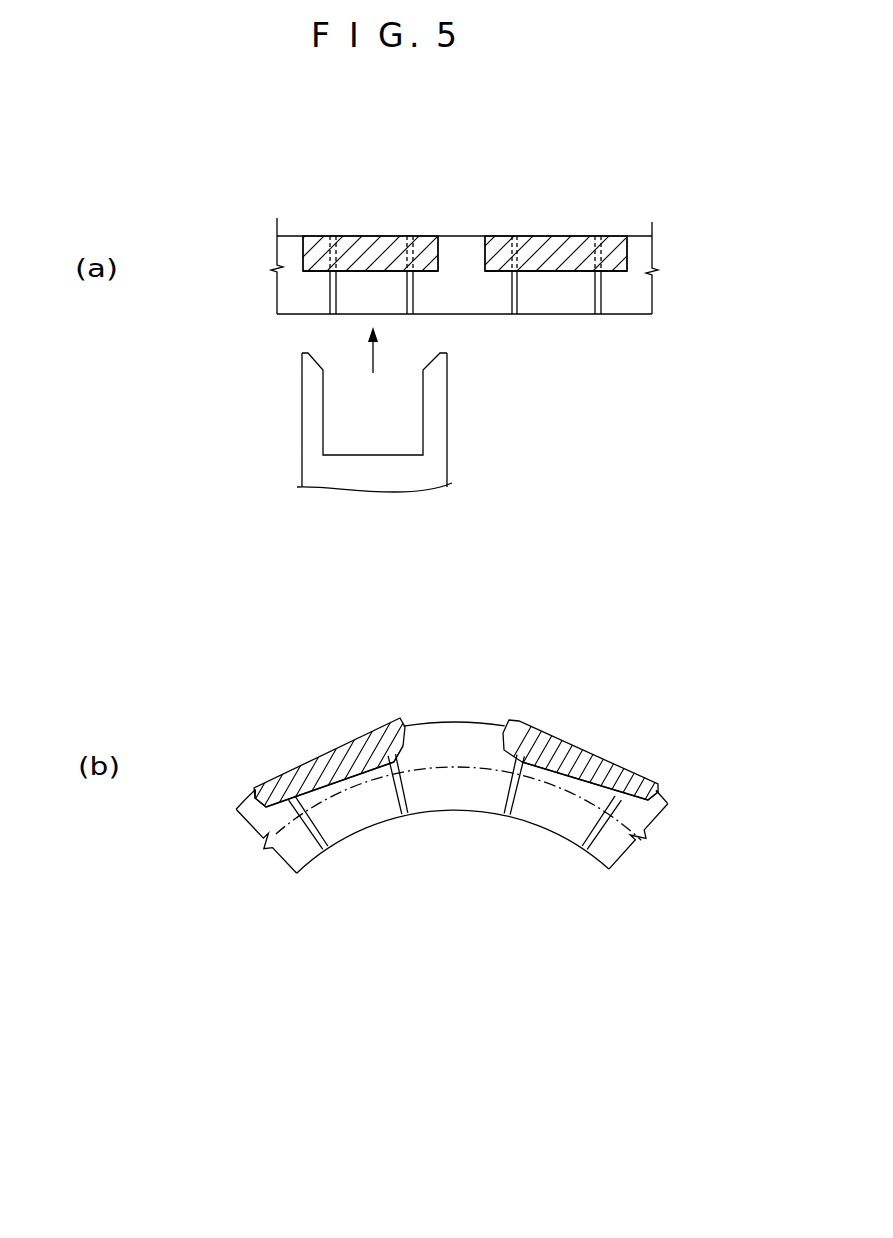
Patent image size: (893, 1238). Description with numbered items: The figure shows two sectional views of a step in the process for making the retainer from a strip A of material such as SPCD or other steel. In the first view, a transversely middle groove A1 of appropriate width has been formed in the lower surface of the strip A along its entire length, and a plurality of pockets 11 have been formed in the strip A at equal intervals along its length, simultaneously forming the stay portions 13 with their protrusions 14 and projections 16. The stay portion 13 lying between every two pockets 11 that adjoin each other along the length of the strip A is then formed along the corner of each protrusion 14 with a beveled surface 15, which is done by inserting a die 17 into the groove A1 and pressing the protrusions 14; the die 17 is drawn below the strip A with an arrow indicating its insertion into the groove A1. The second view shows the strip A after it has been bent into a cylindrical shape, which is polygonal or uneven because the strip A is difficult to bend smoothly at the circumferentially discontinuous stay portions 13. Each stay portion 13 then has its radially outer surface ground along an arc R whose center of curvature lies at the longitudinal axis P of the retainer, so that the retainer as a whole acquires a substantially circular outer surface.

In FIG. 5A, the pocket 11 is at (462, 248).
In FIG. 5B, the pocket 11 is at (425, 790).
In FIG. 5A, the stay portion 13 is at (367, 235).
In FIG. 5B, the stay portion 13 is at (318, 765).
In FIG. 5A, the protrusion 14 is at (318, 236).
In FIG. 5B, the protrusion 14 is at (518, 722).
In FIG. 5A, the beveled surface 15 is at (307, 258).
In FIG. 5B, the beveled surface 15 is at (498, 743).
In FIG. 5A, the projection 16 is at (413, 300).
In FIG. 5B, the projection 16 is at (506, 808).
In FIG. 5A, the die 17 is at (448, 448).
In FIG. 5A, the strip A is at (619, 318).
In FIG. 5A, the groove A1 is at (557, 272).
In FIG. 5B, the longitudinal axis P is at (466, 729).
In FIG. 5B, the arc R is at (652, 789).